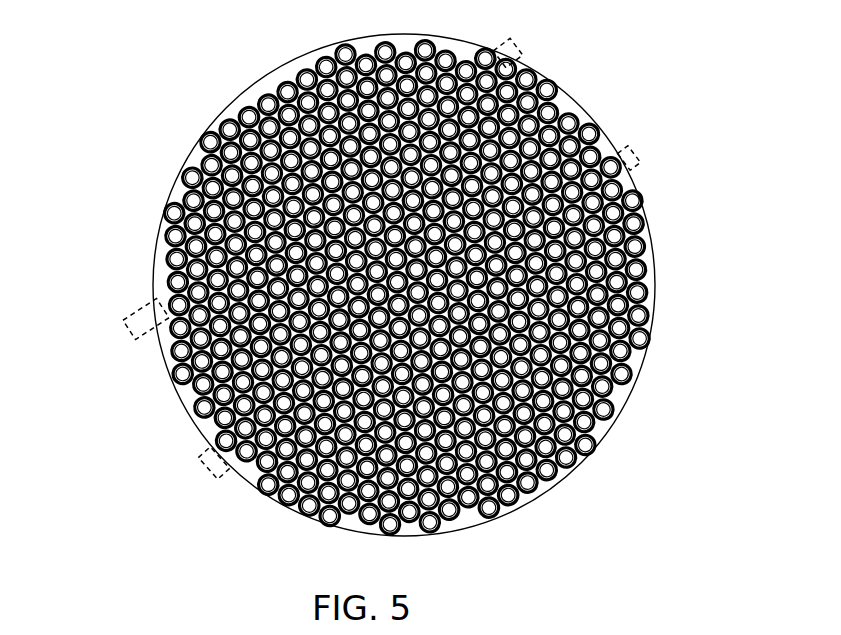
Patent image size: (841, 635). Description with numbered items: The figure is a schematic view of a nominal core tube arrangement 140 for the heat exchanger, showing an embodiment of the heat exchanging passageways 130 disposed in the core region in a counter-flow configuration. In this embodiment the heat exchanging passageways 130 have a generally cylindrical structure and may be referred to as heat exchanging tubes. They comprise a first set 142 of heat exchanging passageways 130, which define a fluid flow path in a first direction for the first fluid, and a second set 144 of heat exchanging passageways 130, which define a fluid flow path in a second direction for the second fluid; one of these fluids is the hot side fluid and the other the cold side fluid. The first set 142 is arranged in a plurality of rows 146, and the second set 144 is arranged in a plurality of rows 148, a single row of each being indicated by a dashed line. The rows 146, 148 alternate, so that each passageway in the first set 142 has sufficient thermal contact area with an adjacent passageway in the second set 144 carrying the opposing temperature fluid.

The heat exchanging passageways 130 is at (572, 91).
The nominal core tube arrangement 140 is at (134, 96).
The first set of heat exchanging passageways 142 is at (188, 376).
The second set of heat exchanging passageways 144 is at (150, 243).
The rows of the first set 146 is at (641, 151).
The rows of the second set 148 is at (521, 44).